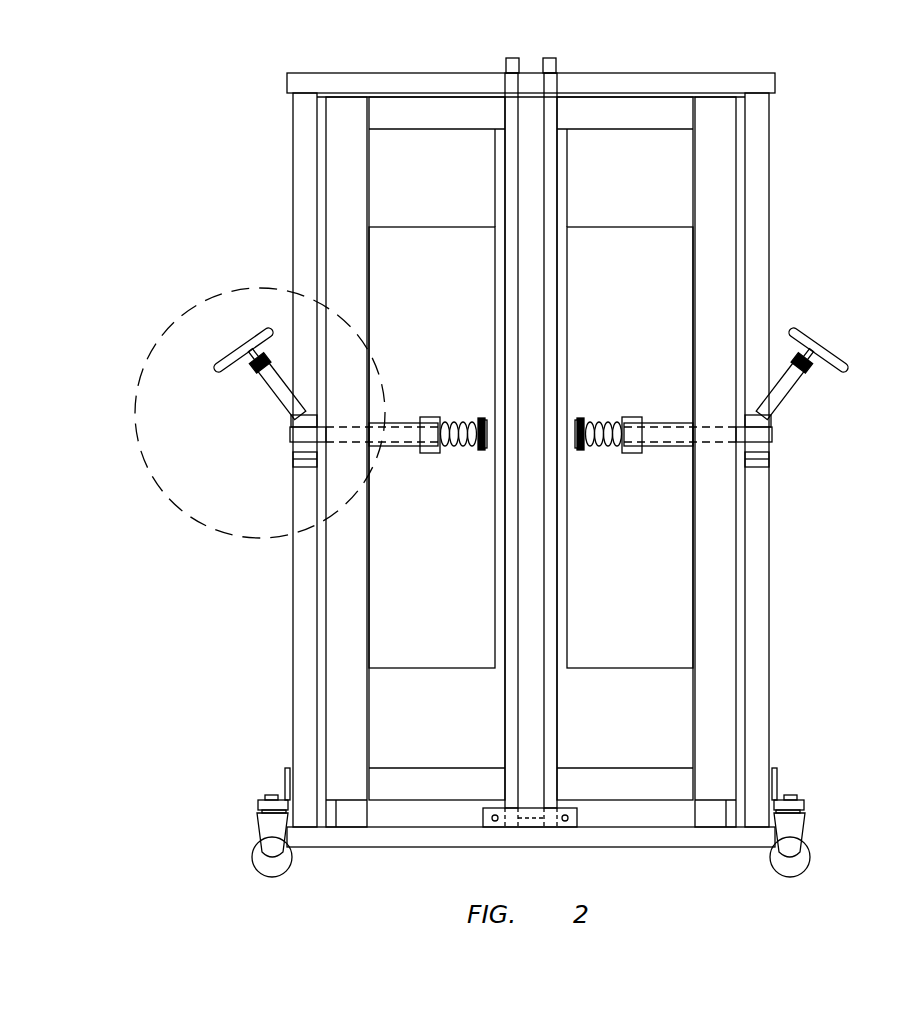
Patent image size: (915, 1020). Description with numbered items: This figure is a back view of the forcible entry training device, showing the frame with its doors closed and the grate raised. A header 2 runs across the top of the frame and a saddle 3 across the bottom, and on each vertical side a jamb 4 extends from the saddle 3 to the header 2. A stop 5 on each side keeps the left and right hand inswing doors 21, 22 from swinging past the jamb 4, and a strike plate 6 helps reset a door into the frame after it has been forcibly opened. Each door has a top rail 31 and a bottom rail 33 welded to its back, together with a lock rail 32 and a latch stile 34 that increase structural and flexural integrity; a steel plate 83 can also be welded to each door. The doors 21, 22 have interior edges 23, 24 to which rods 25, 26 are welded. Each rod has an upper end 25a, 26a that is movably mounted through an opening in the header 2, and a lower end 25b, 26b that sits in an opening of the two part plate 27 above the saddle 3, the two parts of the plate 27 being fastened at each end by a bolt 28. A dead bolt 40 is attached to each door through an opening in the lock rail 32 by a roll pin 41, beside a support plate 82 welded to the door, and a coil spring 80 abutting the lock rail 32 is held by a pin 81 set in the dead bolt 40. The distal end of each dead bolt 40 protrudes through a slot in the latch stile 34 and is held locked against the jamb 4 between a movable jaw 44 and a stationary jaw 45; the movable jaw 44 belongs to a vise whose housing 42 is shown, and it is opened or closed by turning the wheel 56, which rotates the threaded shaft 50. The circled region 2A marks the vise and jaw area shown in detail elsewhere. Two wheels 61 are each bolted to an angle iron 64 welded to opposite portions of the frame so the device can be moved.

The header 2 is at (630, 85).
The detail area 2A is at (165, 325).
The saddle 3 is at (640, 835).
The jamb 4 is at (757, 258).
The stop 5 is at (326, 214).
The strike plate 6 is at (305, 460).
The left hand inswing door 21 is at (604, 615).
The right hand inswing door 22 is at (424, 619).
The interior edge 23 is at (560, 156).
The interior edge 24 is at (503, 158).
The rod 25 is at (557, 538).
The upper end 25a is at (556, 65).
The lower end 25b is at (550, 800).
The rod 26 is at (505, 538).
The upper end 26a is at (506, 65).
The lower end 26b is at (510, 800).
The two part plate 27 is at (535, 828).
The bolt 28 is at (493, 822).
The top rail 31 is at (387, 125).
The lock rail 32 is at (392, 447).
The bottom rail 33 is at (408, 795).
The latch stile 34 is at (374, 292).
The dead bolt 40 is at (396, 422).
The roll pin 41 is at (432, 417).
The housing 42 is at (275, 395).
The movable jaw 44 is at (292, 420).
The stationary jaw 45 is at (294, 455).
The threaded shaft 50 is at (805, 345).
The wheel 56 is at (832, 355).
The wheel 61 is at (258, 860).
The angle iron 64 is at (285, 780).
The coil spring 80 is at (458, 448).
The pin 81 is at (482, 455).
The support plate 82 is at (480, 418).
The steel plate 83 is at (390, 620).